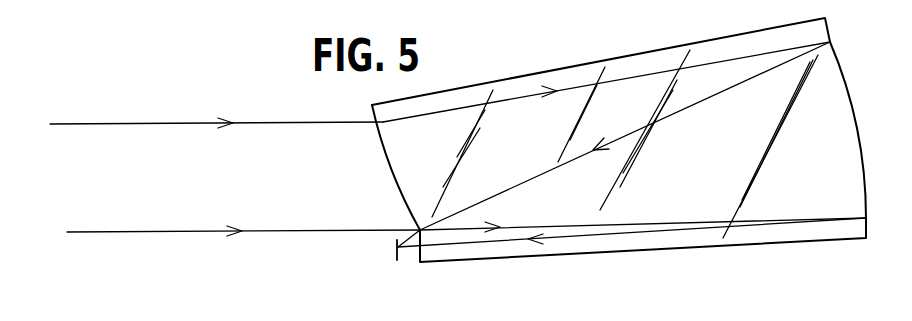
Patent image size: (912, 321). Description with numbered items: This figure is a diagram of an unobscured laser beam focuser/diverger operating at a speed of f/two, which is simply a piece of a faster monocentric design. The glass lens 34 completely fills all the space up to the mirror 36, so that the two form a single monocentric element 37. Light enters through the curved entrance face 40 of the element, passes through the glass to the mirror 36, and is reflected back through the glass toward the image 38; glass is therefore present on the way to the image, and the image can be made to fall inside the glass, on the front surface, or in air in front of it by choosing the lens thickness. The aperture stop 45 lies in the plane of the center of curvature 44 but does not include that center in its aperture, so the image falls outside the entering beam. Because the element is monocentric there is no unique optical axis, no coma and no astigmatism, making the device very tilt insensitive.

The lens 34 is at (688, 174).
The mirror 36 is at (857, 130).
The single monocentric element 37 is at (670, 250).
The image 38 is at (397, 255).
The curved entrance face 40 is at (410, 180).
The center of curvature 44 is at (175, 234).
The aperture stop 45 is at (173, 125).